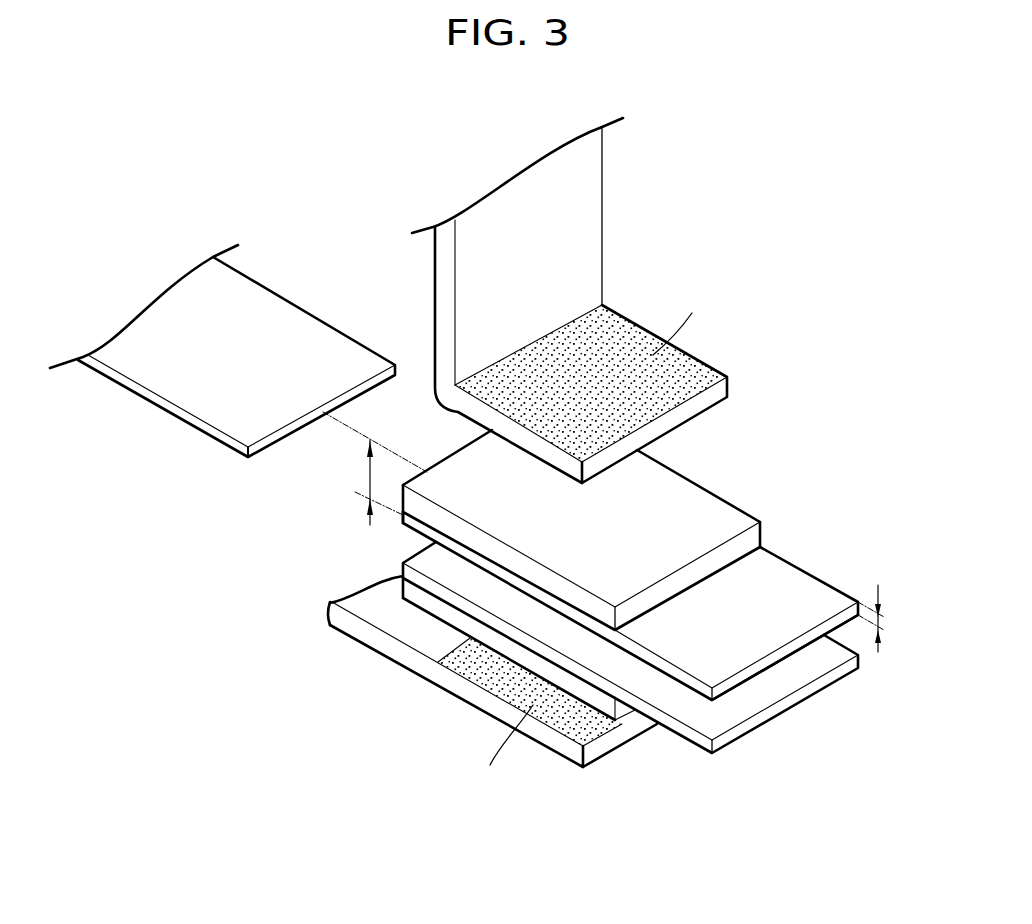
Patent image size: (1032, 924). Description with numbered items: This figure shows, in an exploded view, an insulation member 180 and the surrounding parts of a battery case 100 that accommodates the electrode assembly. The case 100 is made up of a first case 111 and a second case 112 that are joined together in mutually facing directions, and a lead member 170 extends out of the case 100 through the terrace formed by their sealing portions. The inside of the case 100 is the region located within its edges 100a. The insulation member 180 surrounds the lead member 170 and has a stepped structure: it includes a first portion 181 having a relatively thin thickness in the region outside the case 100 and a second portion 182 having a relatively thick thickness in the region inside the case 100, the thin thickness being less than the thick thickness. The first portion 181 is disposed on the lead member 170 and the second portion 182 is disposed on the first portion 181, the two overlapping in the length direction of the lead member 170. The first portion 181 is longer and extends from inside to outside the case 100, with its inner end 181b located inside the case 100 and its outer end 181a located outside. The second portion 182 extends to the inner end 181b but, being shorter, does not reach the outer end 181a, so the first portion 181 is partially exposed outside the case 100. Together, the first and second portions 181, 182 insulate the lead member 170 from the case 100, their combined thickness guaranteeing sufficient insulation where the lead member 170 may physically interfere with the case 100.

The case 100 is at (476, 491).
The edges of the case 100a is at (662, 428).
The first case 111 is at (593, 215).
The second case 112 is at (382, 648).
The lead member 170 is at (295, 317).
The insulation member 180 is at (609, 647).
The first portion 181 is at (807, 577).
The outer end of the first portion 181a is at (777, 655).
The inner end of the first portion 181b is at (402, 517).
The second portion 182 is at (730, 518).